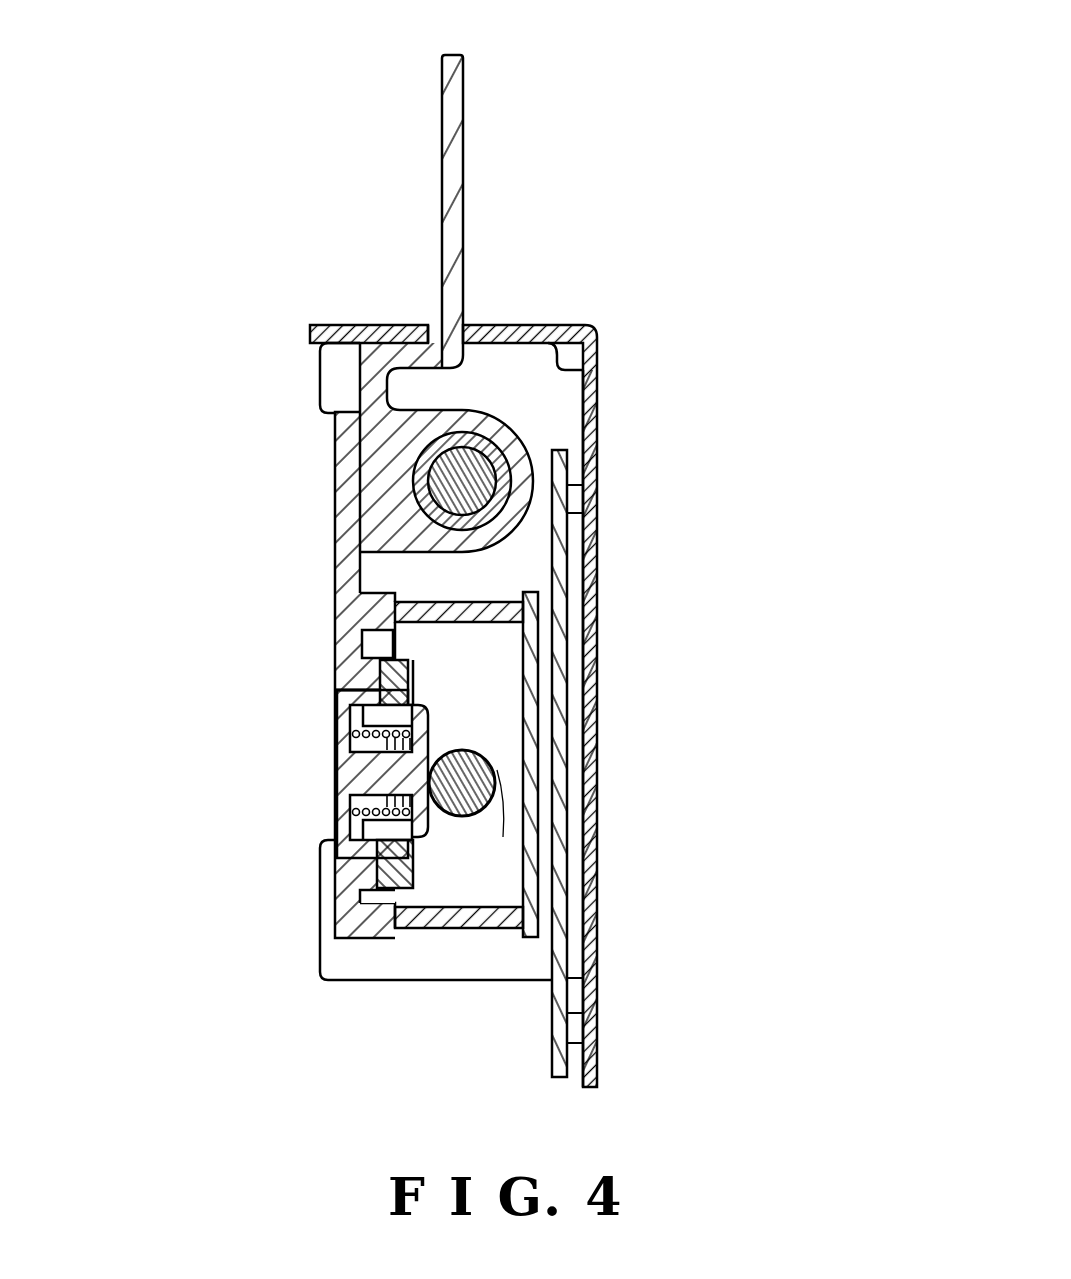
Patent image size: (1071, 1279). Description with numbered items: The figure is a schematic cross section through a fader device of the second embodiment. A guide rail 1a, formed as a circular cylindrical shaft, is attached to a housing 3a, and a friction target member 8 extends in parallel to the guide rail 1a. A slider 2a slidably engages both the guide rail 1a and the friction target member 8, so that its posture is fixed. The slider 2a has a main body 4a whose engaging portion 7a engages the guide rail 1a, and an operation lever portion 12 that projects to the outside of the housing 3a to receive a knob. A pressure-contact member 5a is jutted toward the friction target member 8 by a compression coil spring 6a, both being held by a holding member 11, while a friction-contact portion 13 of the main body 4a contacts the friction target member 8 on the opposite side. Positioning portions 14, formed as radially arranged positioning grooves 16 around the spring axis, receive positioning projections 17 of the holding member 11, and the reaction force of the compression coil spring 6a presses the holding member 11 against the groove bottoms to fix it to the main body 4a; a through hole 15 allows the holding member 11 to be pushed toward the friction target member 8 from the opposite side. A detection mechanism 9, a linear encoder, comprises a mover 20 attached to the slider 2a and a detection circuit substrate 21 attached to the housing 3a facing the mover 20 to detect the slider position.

The guide rail 1a is at (482, 457).
The slider 2a is at (278, 392).
The housing 3a is at (577, 327).
The main body 4a is at (332, 487).
The pressure-contact member 5a is at (343, 775).
The compression coil spring 6a is at (337, 835).
The engaging portion 7a is at (520, 473).
The friction target member 8 is at (487, 752).
The detection mechanism 9 is at (636, 763).
The holding member 11 is at (345, 720).
The operation lever portion 12 is at (465, 138).
The friction-contact portion 13 is at (498, 795).
The positioning portion 14 is at (375, 656).
The through hole 15 is at (338, 688).
The positioning groove 16 is at (392, 597).
The positioning projection 17 is at (405, 597).
The mover 20 is at (536, 673).
The detection circuit substrate 21 is at (570, 628).